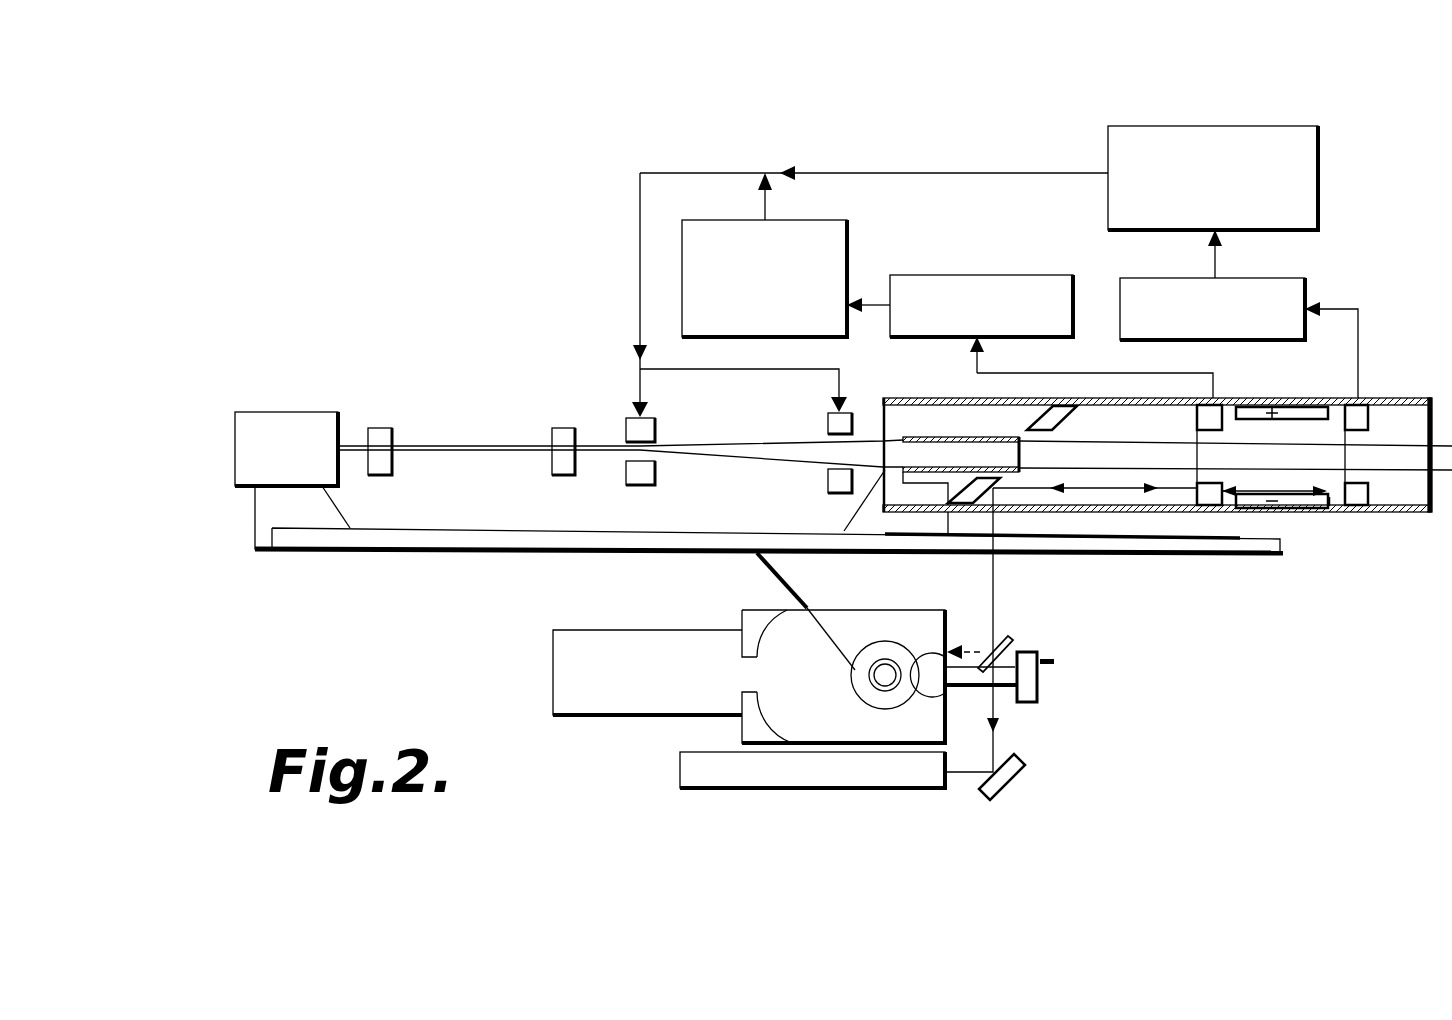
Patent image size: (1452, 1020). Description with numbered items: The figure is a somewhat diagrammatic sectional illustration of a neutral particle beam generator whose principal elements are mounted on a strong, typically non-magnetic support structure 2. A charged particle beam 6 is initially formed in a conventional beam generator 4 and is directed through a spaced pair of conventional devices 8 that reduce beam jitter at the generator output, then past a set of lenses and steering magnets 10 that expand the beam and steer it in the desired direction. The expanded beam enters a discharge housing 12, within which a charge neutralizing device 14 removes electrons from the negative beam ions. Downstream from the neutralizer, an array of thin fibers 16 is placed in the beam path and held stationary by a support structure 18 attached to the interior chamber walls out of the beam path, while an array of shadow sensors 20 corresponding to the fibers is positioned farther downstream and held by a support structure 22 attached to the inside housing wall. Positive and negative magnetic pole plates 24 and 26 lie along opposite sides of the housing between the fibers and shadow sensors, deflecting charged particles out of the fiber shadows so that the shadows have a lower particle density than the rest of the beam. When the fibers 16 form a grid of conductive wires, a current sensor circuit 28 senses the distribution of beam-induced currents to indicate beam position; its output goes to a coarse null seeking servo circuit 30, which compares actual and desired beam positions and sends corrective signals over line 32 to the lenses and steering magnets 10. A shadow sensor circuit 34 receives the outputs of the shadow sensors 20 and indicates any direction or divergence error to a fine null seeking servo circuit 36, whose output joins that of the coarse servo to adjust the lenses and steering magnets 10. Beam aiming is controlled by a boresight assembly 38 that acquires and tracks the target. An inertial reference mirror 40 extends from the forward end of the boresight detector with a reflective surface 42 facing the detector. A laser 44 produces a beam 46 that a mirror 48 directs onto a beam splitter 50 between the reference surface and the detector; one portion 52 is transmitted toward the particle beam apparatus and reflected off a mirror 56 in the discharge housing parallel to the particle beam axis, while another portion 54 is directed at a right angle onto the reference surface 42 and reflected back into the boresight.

The support structure 2 is at (742, 582).
The beam generator 4 is at (317, 412).
The charged particle beam 6 is at (458, 455).
The jitter reducing devices 8 is at (548, 428).
The lenses and steering magnets 10 is at (625, 425).
The discharge housing 12 is at (898, 398).
The charge neutralizing device 14 is at (945, 437).
The array of thin fibers 16 is at (1192, 480).
The support structure 18 is at (1208, 502).
The shadow sensors 20 is at (1340, 478).
The support structure 22 is at (1362, 500).
The positive magnetic pole plate 24 is at (1296, 407).
The negative magnetic pole plate 26 is at (1312, 506).
The current sensor circuit 28 is at (1035, 275).
The coarse null seeking servo circuit 30 is at (848, 232).
The line 32 is at (640, 256).
The shadow sensor circuit 34 is at (1284, 278).
The fine null seeking servo circuit 36 is at (1320, 173).
The boresight assembly 38 is at (648, 735).
The inertial reference mirror 40 is at (1055, 661).
The reflective surface 42 is at (1005, 695).
The laser 44 is at (862, 788).
The laser beam 46 is at (985, 800).
The mirror 48 is at (1030, 778).
The beam splitter 50 is at (1002, 642).
The transmitted laser beam portion 52 is at (994, 580).
The reflected laser beam portion 54 is at (1012, 655).
The mirror 56 is at (972, 505).